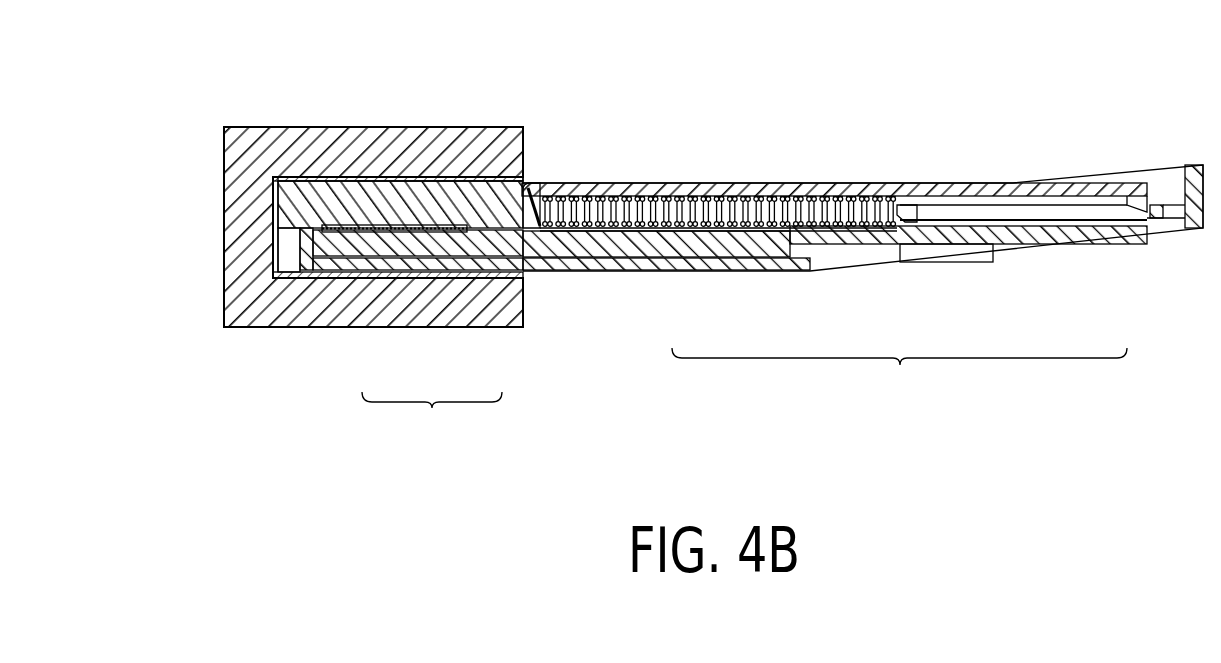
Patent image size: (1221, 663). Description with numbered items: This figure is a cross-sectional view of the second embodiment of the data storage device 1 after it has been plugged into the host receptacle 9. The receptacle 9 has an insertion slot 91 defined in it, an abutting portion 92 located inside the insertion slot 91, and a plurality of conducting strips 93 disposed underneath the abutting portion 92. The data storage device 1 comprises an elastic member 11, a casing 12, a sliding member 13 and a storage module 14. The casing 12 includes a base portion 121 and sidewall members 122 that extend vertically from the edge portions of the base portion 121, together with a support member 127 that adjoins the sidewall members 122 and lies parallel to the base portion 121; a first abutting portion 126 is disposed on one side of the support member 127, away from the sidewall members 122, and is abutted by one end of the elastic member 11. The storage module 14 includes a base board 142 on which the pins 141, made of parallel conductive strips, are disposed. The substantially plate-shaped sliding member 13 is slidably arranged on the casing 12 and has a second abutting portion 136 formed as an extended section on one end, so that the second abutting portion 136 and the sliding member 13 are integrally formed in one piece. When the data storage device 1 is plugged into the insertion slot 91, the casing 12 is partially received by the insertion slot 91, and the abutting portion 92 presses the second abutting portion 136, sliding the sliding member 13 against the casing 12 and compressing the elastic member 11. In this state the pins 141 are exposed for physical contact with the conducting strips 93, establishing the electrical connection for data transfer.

The data storage device 1 is at (1043, 137).
The receptacle 9 is at (246, 122).
The insertion slot 91 is at (285, 261).
The abutting portion 92 is at (284, 197).
The conducting strips 93 is at (410, 213).
The elastic member 11 is at (734, 212).
The casing 12 is at (899, 376).
The base portion 121 is at (687, 265).
The sidewall members 122 is at (1165, 211).
The first abutting portion 126 is at (902, 216).
The support member 127 is at (860, 235).
The sliding member 13 is at (637, 183).
The second abutting portion 136 is at (535, 217).
The storage module 14 is at (432, 419).
The pins 141 is at (373, 235).
The base board 142 is at (513, 243).